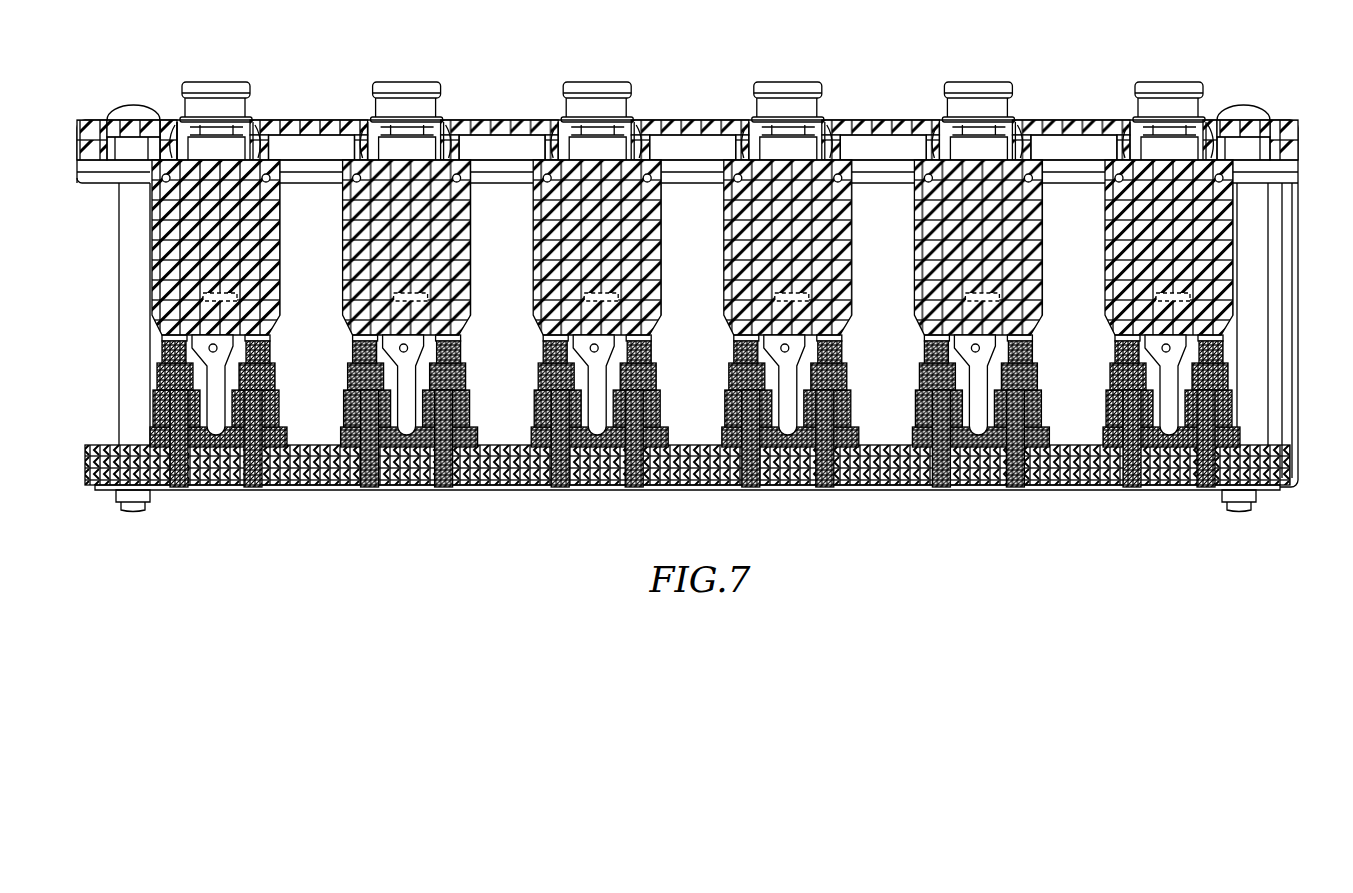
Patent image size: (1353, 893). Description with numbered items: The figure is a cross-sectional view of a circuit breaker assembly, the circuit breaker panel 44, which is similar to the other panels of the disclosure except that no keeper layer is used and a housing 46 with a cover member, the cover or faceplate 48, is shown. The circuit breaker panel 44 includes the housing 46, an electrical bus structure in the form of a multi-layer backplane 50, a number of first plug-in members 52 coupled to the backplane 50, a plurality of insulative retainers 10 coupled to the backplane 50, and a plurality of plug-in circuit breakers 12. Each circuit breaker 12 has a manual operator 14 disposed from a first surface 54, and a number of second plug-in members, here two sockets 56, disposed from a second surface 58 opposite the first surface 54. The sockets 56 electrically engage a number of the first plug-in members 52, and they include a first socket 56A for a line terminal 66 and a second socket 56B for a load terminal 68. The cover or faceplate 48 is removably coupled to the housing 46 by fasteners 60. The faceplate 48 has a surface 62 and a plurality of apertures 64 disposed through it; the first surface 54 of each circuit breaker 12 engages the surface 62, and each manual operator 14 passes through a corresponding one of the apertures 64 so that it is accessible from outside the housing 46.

The circuit breaker panel 44 is at (678, 50).
The manual operator 14 is at (211, 81).
The fasteners 60 is at (128, 106).
The first surface 54 is at (172, 118).
The apertures 64 is at (255, 124).
The surface 62 is at (524, 137).
The cover or faceplate 48 is at (687, 121).
The housing 46 is at (1303, 223).
The plug-in circuit breakers 12 is at (284, 248).
The second surface 58 is at (246, 343).
The sockets 56 is at (290, 346).
The first socket 56A is at (163, 362).
The second socket 56B is at (272, 359).
The line terminal 66 is at (172, 378).
The load terminal 68 is at (258, 376).
The insulative retainers 10 is at (705, 416).
The multi-layer backplane 50 is at (90, 445).
The first plug-in members 52 is at (250, 490).